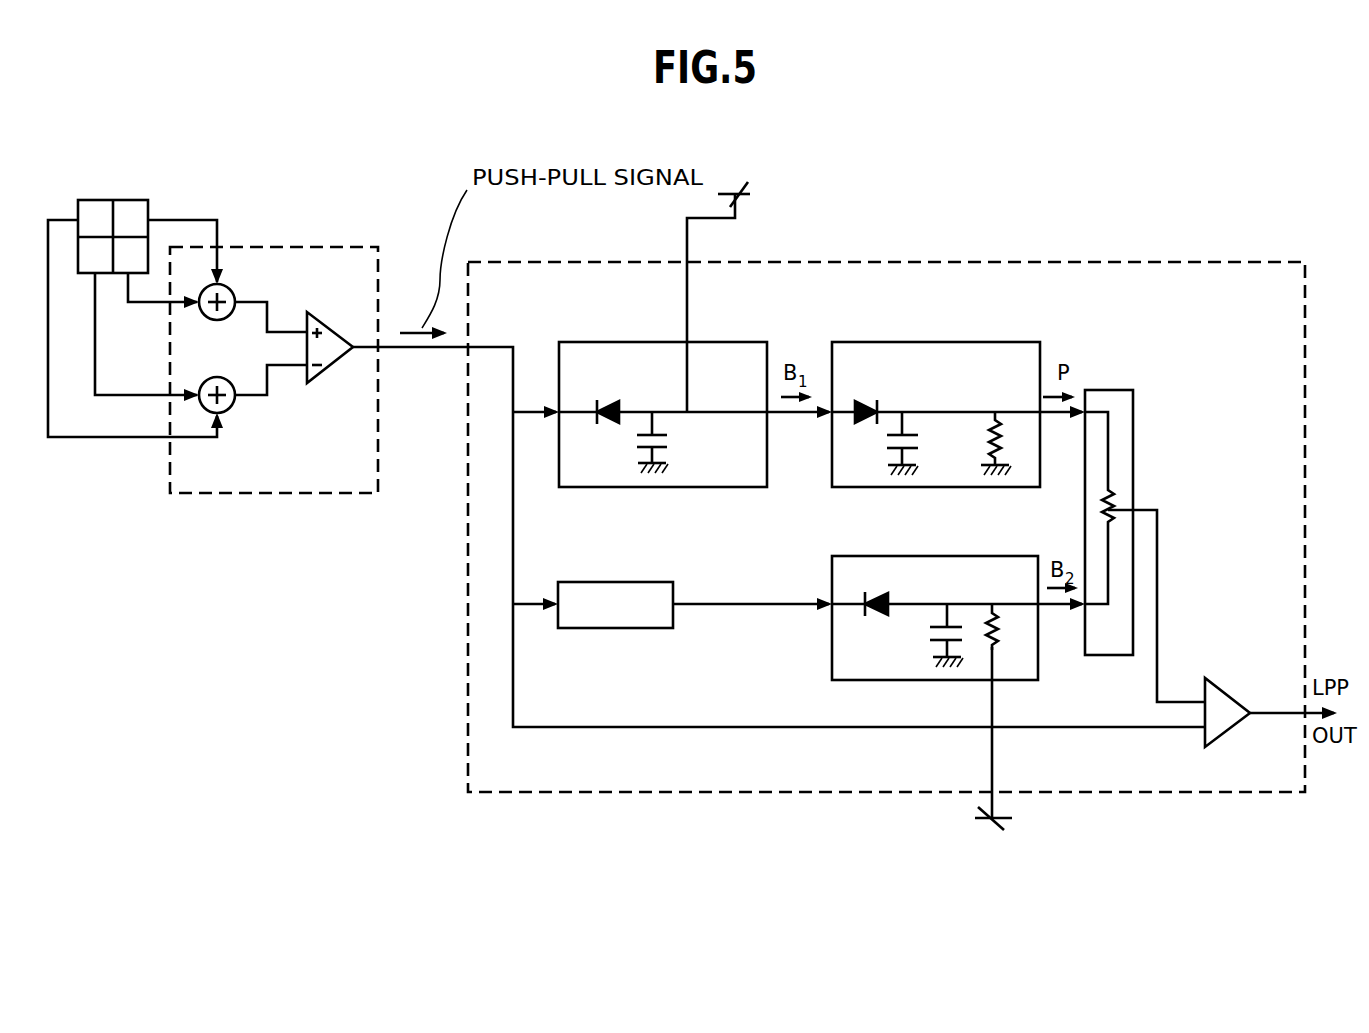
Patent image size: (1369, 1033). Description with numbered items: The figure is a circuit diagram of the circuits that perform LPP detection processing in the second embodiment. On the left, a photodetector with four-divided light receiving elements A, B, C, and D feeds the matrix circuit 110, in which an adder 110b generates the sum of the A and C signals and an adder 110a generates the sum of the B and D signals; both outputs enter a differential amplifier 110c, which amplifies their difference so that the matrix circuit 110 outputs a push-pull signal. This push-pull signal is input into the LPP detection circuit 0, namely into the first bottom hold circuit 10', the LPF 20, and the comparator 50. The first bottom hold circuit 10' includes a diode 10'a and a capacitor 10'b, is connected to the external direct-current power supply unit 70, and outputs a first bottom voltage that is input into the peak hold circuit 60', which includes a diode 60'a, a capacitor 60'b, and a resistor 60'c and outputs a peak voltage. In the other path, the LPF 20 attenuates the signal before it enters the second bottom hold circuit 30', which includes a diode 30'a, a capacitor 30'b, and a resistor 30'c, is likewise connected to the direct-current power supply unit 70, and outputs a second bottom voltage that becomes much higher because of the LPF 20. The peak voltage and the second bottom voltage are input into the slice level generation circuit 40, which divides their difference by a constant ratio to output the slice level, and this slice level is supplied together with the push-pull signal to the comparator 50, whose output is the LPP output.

The matrix circuit 110 is at (235, 343).
The adder 110a is at (240, 290).
The adder 110b is at (240, 413).
The differential amplifier 110c is at (331, 365).
The LPP detection circuit 0 is at (886, 499).
The direct-current power supply unit 70 is at (867, 499).
The bottom hold circuit 1 10' is at (642, 385).
The diode 10'a is at (594, 399).
The capacitor 10'b is at (626, 442).
The peak hold circuit 60' is at (916, 386).
The diode 60'a is at (867, 398).
The capacitor 60'b is at (929, 443).
The resistor 60'c is at (999, 424).
The LPF 20 is at (573, 579).
The bottom hold circuit 2 30' is at (942, 594).
The diode 30'a is at (882, 590).
The capacitor 30'b is at (920, 635).
The resistor 30'c is at (1041, 645).
The slice level generation circuit 40 is at (1133, 452).
The comparator 50 is at (1228, 690).